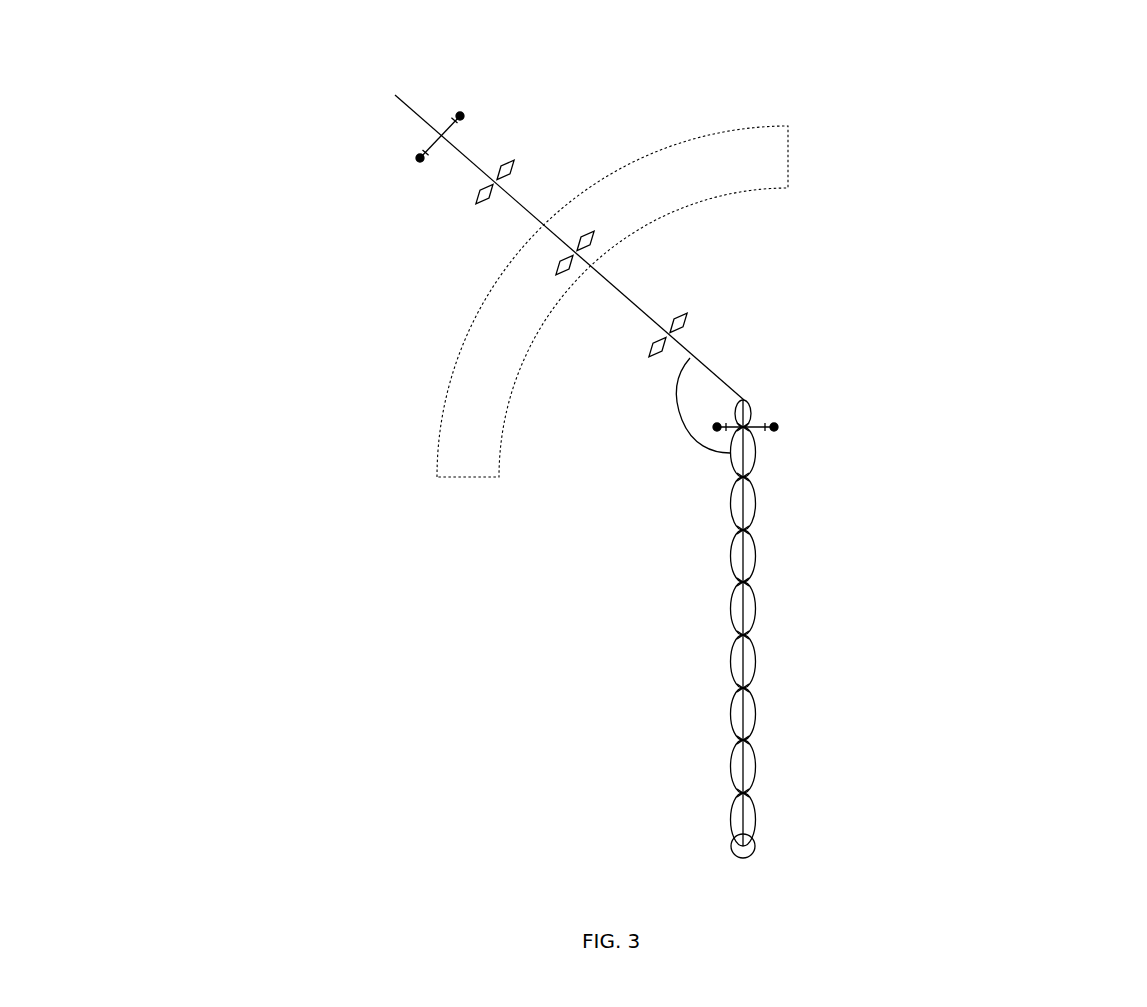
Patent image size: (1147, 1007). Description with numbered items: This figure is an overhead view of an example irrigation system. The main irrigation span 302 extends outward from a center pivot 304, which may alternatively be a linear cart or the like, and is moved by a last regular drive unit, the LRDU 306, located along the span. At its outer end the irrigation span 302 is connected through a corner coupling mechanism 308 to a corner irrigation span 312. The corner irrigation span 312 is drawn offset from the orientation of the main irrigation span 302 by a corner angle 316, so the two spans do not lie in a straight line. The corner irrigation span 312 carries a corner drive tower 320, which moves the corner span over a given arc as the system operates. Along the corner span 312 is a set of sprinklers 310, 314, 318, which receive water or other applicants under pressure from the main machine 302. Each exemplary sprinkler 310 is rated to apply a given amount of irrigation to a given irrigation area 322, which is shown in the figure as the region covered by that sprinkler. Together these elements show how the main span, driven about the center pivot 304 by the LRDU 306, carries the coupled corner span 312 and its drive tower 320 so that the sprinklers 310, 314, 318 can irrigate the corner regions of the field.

The irrigation span 302 is at (755, 557).
The center pivot 304 is at (757, 835).
The LRDU 306 is at (778, 427).
The corner coupling mechanism 308 is at (745, 403).
The sprinkler 310 is at (583, 262).
The corner irrigation span 312 is at (477, 162).
The sprinkler 314 is at (648, 357).
The corner angle 316 is at (683, 422).
The sprinkler 318 is at (472, 204).
The corner drive tower 320 is at (416, 157).
The irrigation area 322 is at (632, 185).